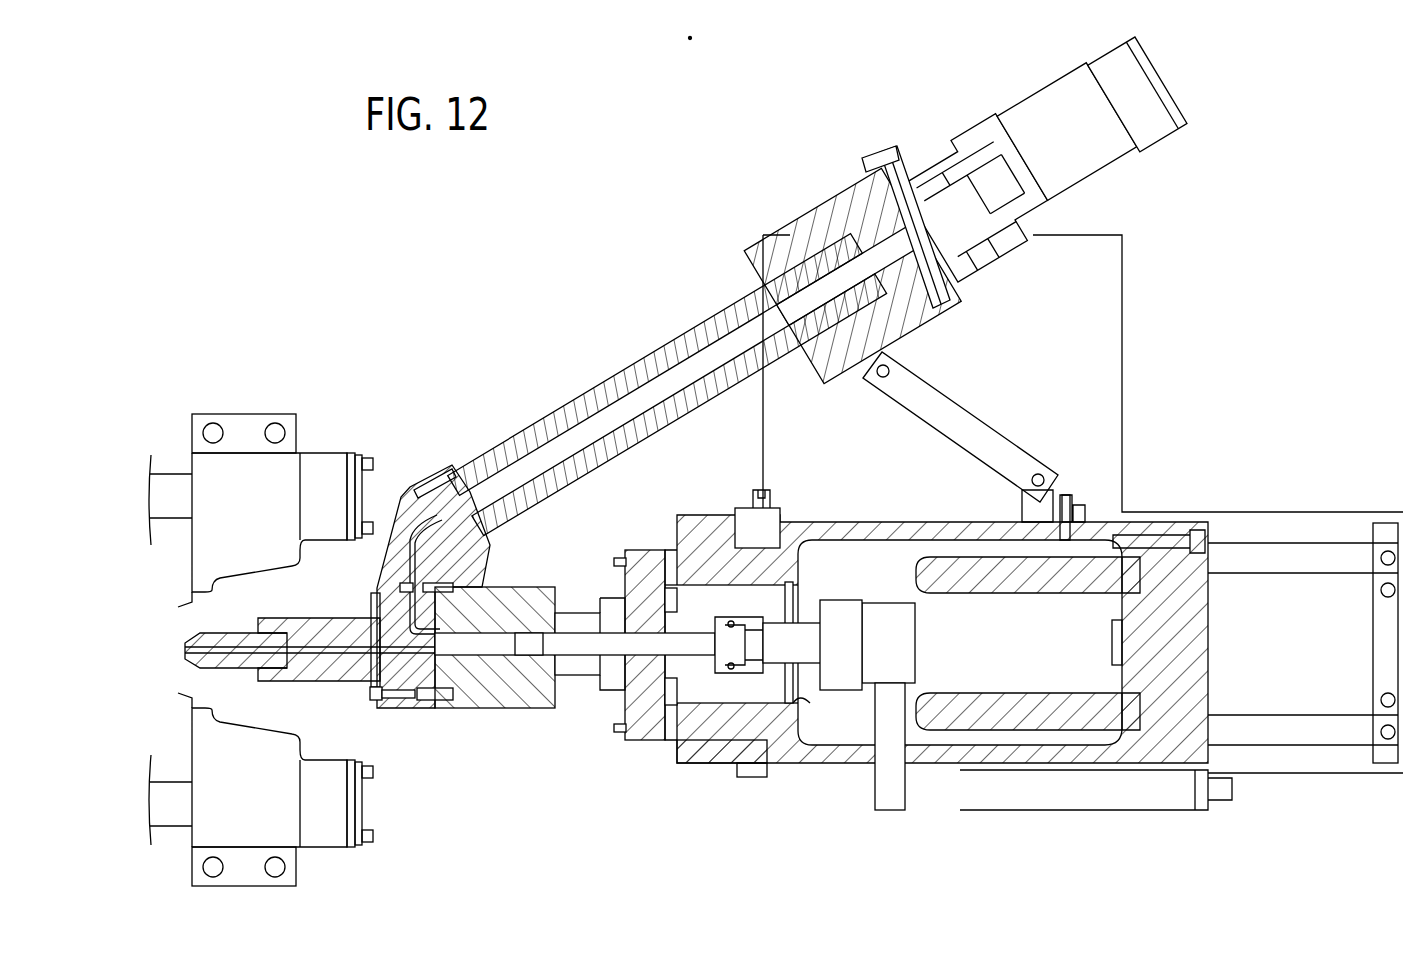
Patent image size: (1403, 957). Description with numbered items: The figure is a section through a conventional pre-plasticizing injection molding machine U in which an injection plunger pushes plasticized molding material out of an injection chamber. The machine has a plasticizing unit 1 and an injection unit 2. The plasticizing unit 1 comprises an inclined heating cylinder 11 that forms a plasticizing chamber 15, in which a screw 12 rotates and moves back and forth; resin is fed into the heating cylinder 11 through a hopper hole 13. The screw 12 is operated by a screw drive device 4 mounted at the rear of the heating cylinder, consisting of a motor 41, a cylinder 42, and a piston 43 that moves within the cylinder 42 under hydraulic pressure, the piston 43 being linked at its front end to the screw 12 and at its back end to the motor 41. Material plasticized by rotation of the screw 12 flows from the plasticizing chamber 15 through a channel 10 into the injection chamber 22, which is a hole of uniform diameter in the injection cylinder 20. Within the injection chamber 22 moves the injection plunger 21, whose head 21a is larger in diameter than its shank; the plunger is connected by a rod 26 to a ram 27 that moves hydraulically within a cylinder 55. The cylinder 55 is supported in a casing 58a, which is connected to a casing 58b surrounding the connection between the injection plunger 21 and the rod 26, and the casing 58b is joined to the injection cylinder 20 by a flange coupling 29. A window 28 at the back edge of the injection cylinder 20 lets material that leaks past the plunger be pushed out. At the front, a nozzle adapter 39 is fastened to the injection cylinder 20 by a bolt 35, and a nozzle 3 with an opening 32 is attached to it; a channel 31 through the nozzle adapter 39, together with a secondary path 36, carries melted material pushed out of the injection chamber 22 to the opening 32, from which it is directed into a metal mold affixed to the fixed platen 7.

The plasticizing unit 1 is at (520, 312).
The injection molding machine U is at (585, 272).
The injection unit 2 is at (530, 772).
The nozzle 3 is at (185, 658).
The screw drive device 4 is at (1047, 72).
The fixed platen 7 is at (192, 448).
The channel 10 is at (385, 561).
The heating cylinder 11 is at (700, 322).
The screw 12 is at (607, 410).
The hopper hole 13 is at (822, 280).
The plasticizing chamber 15 is at (480, 470).
The injection cylinder 20 is at (560, 690).
The injection plunger 21 is at (690, 640).
The head 21a is at (523, 656).
The injection chamber 22 is at (480, 650).
The rod 26 is at (825, 625).
The ram 27 is at (1040, 665).
The window 28 is at (565, 690).
The flange coupling 29 is at (622, 590).
The channel 31 is at (343, 655).
The opening 32 is at (185, 641).
The bolt 35 is at (378, 701).
The secondary path 36 is at (430, 701).
The nozzle adapter 39 is at (300, 676).
The motor 41 is at (1178, 82).
The cylinder 42 is at (995, 252).
The piston 43 is at (960, 290).
The cylinder 55 is at (1112, 735).
The casing 58a is at (793, 778).
The casing 58b is at (648, 750).